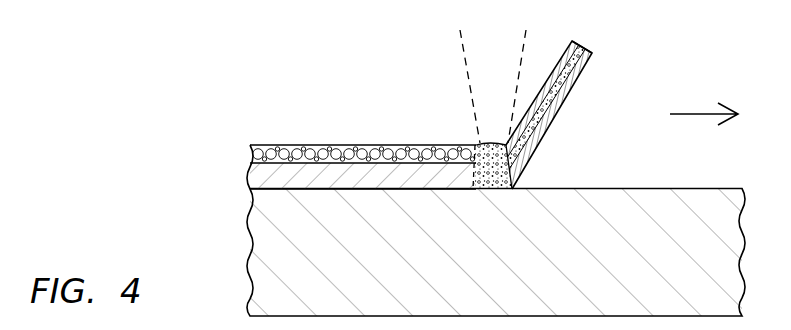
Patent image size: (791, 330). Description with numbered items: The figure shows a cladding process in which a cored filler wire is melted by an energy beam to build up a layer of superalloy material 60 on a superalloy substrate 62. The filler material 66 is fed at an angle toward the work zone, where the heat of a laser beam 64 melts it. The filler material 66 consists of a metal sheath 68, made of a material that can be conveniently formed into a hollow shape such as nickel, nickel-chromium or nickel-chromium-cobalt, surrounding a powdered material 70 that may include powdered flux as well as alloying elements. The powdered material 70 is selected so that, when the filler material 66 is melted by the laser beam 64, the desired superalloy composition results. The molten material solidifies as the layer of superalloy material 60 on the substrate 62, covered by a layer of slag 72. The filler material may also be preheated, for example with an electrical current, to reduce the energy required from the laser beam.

The layer of superalloy material 60 is at (262, 177).
The superalloy substrate 62 is at (258, 242).
The laser beam 64 is at (470, 74).
The filler material 66 is at (559, 118).
The metal sheath 68 is at (577, 80).
The powdered material 70 is at (580, 44).
The layer of slag 72 is at (262, 153).